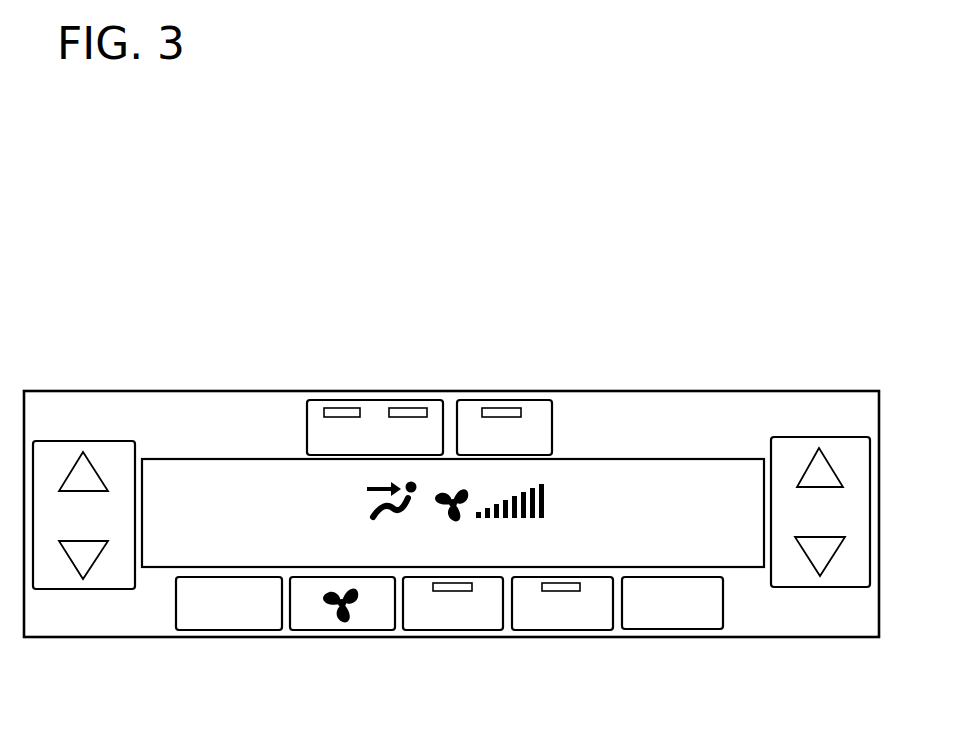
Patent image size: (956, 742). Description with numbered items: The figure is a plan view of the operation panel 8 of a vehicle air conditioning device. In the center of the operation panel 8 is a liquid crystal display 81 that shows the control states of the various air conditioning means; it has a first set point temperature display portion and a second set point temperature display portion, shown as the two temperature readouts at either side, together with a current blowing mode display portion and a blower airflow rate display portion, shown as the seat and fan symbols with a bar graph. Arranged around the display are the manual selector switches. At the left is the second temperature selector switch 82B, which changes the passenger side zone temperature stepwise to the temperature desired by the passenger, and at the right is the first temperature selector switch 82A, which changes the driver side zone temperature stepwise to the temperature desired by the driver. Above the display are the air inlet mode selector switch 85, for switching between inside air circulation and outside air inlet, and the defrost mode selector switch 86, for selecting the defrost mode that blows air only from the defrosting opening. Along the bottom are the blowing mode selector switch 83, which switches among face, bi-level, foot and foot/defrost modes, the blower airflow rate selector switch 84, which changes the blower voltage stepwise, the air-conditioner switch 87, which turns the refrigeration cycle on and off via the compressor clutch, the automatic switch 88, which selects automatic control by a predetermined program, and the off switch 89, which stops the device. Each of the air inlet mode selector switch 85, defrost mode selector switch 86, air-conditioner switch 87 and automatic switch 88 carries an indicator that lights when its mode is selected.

The operation panel 8 is at (210, 372).
The liquid crystal display 81 is at (636, 470).
The first temperature selector switch 82A is at (822, 445).
The second temperature selector switch 82B is at (81, 452).
The blowing mode selector switch 83 is at (221, 630).
The blower airflow rate selector switch 84 is at (343, 630).
The air inlet mode selector switch 85 is at (372, 410).
The defrost mode selector switch 86 is at (497, 402).
The air-conditioner switch 87 is at (452, 630).
The automatic switch 88 is at (560, 630).
The off switch 89 is at (672, 628).